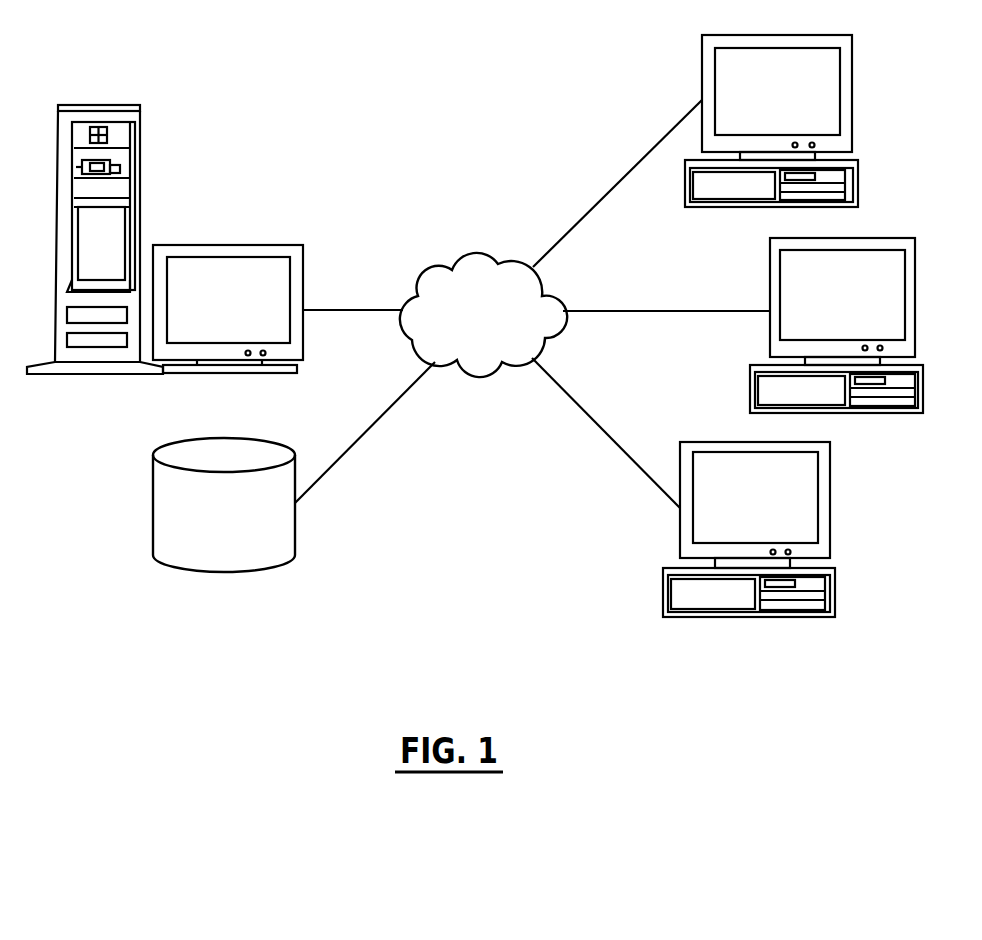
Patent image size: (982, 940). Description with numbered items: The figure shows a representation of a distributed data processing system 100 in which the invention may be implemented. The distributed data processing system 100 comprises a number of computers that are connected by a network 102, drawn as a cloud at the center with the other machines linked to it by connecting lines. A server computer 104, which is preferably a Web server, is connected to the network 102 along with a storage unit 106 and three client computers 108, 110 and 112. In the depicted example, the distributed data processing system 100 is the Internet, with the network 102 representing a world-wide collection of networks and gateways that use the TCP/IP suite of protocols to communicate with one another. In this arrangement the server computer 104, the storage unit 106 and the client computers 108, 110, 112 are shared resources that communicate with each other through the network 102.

The distributed data processing system 100 is at (400, 88).
The network 102 is at (458, 345).
The server computer 104 is at (203, 313).
The storage unit 106 is at (195, 530).
The client computer 108 is at (752, 104).
The client computer 110 is at (818, 314).
The client computer 112 is at (733, 513).